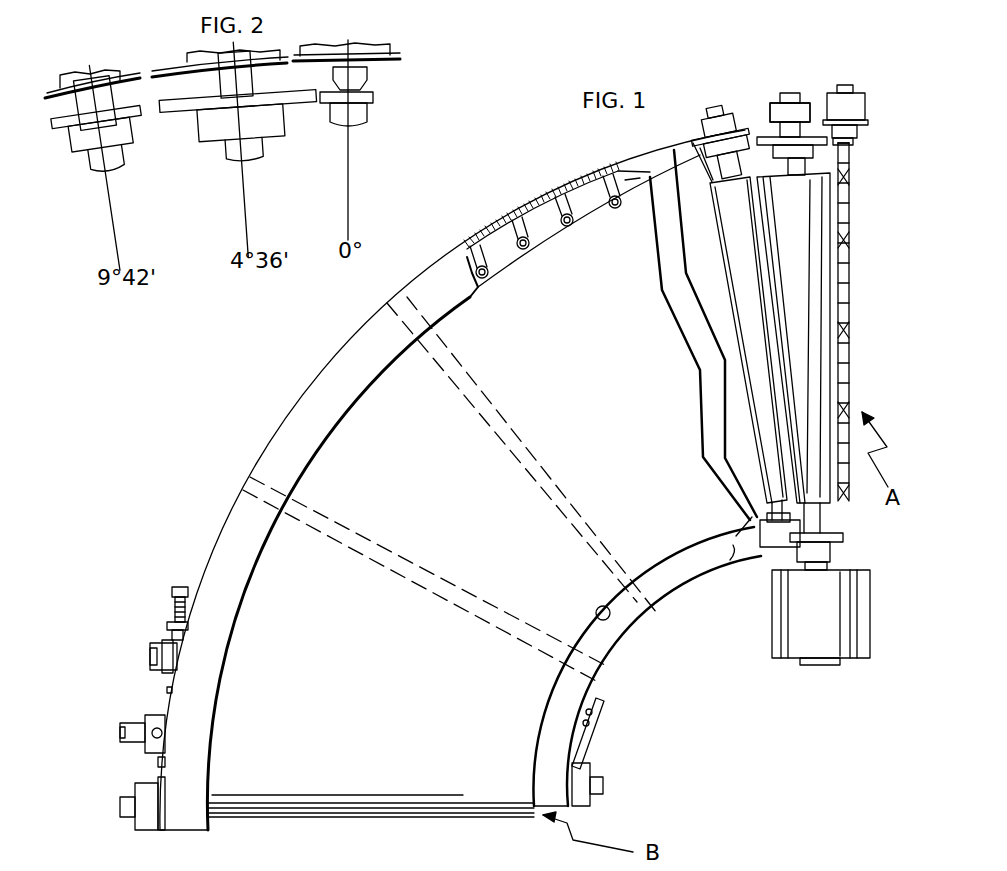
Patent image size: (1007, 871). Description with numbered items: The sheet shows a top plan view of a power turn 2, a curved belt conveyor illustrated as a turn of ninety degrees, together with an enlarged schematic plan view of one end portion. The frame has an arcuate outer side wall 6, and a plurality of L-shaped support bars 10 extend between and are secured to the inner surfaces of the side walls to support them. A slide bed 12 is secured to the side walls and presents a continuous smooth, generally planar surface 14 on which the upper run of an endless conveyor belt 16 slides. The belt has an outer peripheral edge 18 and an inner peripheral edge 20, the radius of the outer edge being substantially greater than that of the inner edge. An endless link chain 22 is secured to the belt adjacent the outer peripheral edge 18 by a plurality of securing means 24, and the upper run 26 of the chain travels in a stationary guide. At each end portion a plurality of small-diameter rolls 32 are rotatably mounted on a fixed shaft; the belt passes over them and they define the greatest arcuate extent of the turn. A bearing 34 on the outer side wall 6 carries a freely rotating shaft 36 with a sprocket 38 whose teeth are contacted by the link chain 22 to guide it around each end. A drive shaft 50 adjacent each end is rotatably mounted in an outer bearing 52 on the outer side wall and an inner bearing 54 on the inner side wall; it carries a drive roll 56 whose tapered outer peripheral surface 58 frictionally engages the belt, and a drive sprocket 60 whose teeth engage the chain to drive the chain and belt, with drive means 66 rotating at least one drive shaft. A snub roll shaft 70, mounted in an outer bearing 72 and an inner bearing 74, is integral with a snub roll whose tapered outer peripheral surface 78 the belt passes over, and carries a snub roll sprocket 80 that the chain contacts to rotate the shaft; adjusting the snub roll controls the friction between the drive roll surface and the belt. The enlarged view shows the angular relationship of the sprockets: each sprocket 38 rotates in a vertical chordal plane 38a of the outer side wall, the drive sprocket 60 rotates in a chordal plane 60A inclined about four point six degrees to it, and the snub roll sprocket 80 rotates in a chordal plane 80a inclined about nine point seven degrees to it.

In FIG. 1, the power turn 2 is at (247, 384).
In FIG. 2, the outer side wall 6 is at (352, 52).
In FIG. 1, the L-shaped support bars 10 is at (392, 300).
In FIG. 1, the slide bed 12 is at (733, 560).
In FIG. 1, the generally planar surface 14 is at (713, 342).
In FIG. 1, the endless conveyor belt 16 is at (629, 406).
In FIG. 1, the outer peripheral edge 18 is at (643, 178).
In FIG. 1, the inner peripheral edge 20 is at (603, 605).
In FIG. 1, the endless link chain 22 is at (477, 238).
In FIG. 1, the securing means 24 is at (617, 213).
In FIG. 1, the upper run of the endless link chain 26 is at (527, 205).
In FIG. 1, the rolls 32 is at (851, 265).
In FIG. 1, the bearing 34 is at (860, 102).
In FIG. 1, the shaft 36 is at (851, 130).
In FIG. 1, the sprocket 38 is at (860, 145).
In FIG. 2, the sprocket 38 is at (372, 104).
In FIG. 2, the vertical chordal plane 38a is at (375, 97).
In FIG. 1, the drive shaft 50 is at (783, 133).
In FIG. 1, the outer bearing 52 is at (775, 110).
In FIG. 1, the inner bearing 54 is at (833, 548).
In FIG. 1, the drive roll 56 is at (838, 165).
In FIG. 1, the tapered outer peripheral surface 58 is at (807, 256).
In FIG. 1, the drive sprocket 60 is at (807, 138).
In FIG. 2, the drive sprocket 60 is at (177, 113).
In FIG. 2, the vertical chordal plane 60A is at (268, 100).
In FIG. 1, the drive means 66 is at (790, 645).
In FIG. 1, the snub roll shaft 70 is at (713, 180).
In FIG. 1, the outer bearing 72 is at (703, 123).
In FIG. 1, the inner bearing 74 is at (770, 537).
In FIG. 1, the tapered outer peripheral surface 78 is at (740, 218).
In FIG. 1, the snub roll sprocket 80 is at (743, 117).
In FIG. 2, the snub roll sprocket 80 is at (62, 128).
In FIG. 2, the vertical chordal plane 80a is at (97, 108).